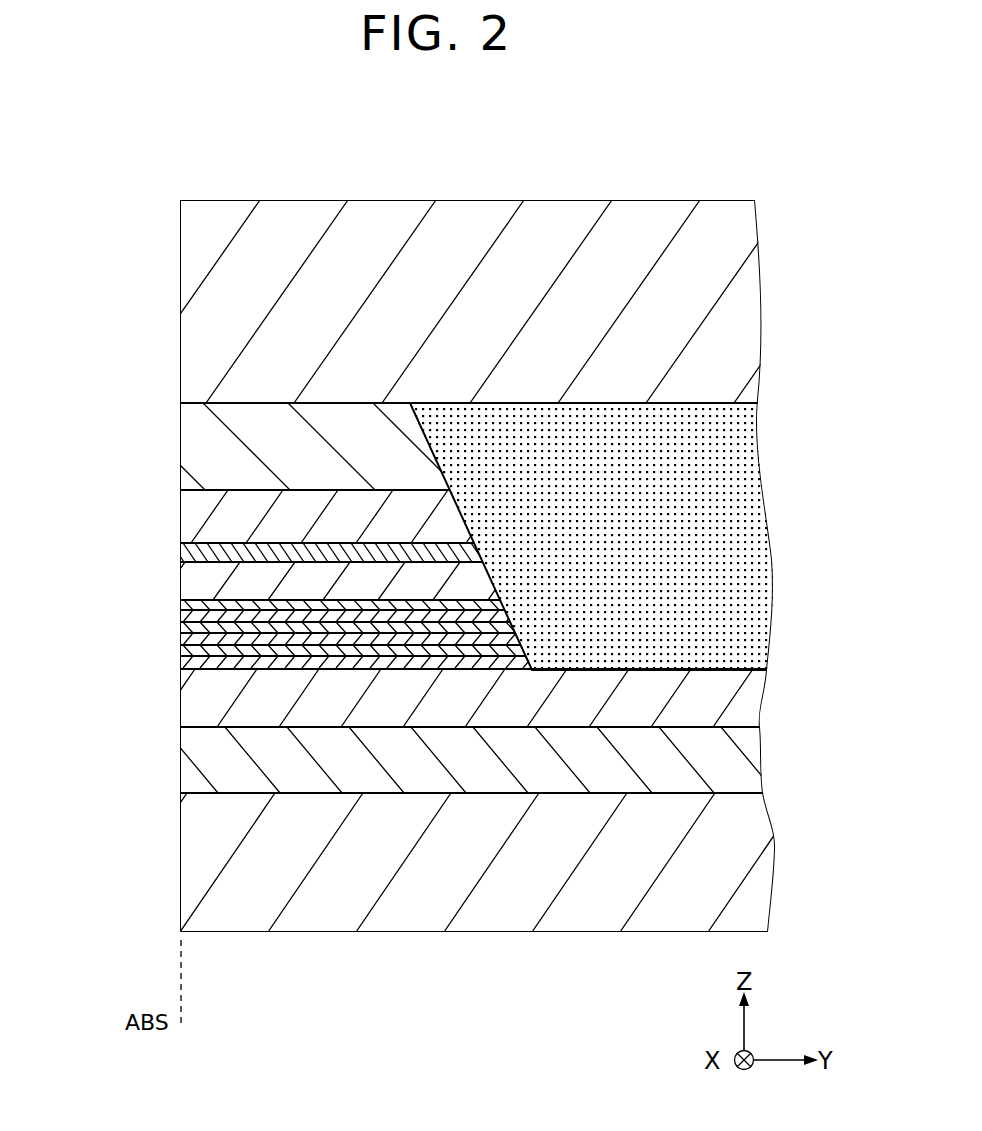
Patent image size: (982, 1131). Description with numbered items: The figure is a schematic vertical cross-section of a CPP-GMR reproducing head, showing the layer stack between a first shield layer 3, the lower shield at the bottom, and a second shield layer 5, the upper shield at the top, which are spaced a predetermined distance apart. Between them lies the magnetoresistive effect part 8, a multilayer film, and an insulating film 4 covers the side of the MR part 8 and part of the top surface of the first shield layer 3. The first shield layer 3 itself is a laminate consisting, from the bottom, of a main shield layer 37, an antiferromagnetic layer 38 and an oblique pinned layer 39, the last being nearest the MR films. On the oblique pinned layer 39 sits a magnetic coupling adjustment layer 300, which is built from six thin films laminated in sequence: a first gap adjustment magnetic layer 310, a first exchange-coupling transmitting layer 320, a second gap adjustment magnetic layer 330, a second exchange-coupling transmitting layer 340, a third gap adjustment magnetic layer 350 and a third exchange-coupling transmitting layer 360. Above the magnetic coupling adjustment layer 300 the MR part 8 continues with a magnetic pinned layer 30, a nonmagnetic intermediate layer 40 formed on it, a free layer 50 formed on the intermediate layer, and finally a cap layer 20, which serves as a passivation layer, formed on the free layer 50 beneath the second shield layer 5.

The first shield layer 3 is at (465, 800).
The insulating film 4 is at (600, 536).
The second shield layer 5 is at (453, 301).
The magnetoresistive effect part 8 is at (205, 392).
The cap layer 20 is at (331, 446).
The magnetic pinned layer 30 is at (364, 581).
The nonmagnetic intermediate layer 40 is at (339, 552).
The free layer 50 is at (319, 516).
The main shield layer 37 is at (447, 862).
The antiferromagnetic layer 38 is at (500, 760).
The oblique pinned layer 39 is at (485, 698).
The magnetic coupling adjustment layer 300 is at (366, 633).
The first gap adjustment magnetic layer 310 is at (366, 662).
The first exchange-coupling transmitting layer 320 is at (366, 650).
The second gap adjustment magnetic layer 330 is at (366, 639).
The second exchange-coupling transmitting layer 340 is at (366, 627).
The third gap adjustment magnetic layer 350 is at (366, 616).
The third exchange-coupling transmitting layer 360 is at (366, 604).